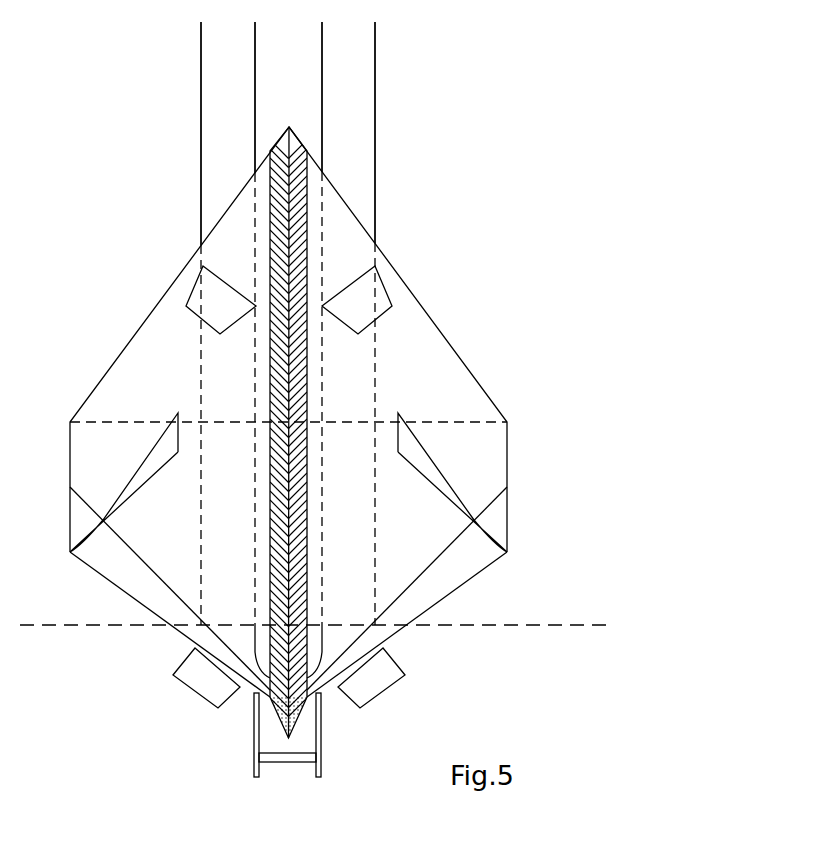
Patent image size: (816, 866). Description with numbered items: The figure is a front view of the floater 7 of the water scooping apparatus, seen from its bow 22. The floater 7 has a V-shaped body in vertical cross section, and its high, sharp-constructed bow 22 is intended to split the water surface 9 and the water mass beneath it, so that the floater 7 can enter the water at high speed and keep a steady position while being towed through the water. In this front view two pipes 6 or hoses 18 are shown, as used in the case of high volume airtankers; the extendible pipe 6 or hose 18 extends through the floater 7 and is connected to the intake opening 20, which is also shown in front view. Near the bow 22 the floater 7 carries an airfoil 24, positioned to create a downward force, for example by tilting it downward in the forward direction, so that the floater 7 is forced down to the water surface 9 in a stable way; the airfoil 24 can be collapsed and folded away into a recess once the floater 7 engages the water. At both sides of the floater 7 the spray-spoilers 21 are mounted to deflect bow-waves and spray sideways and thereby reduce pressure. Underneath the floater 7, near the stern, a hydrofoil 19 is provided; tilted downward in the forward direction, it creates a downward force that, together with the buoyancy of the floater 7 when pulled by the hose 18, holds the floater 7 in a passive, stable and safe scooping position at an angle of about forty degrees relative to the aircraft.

The extendible pipe 6 is at (357, 94).
The hose 18 is at (288, 133).
The floater 7 is at (453, 343).
The bow 22 is at (302, 217).
The airfoil 24 is at (368, 297).
The spray-spoilers 21 is at (442, 472).
The water surface 9 is at (497, 625).
The intake opening 20 is at (383, 665).
The hydrofoil 19 is at (277, 762).